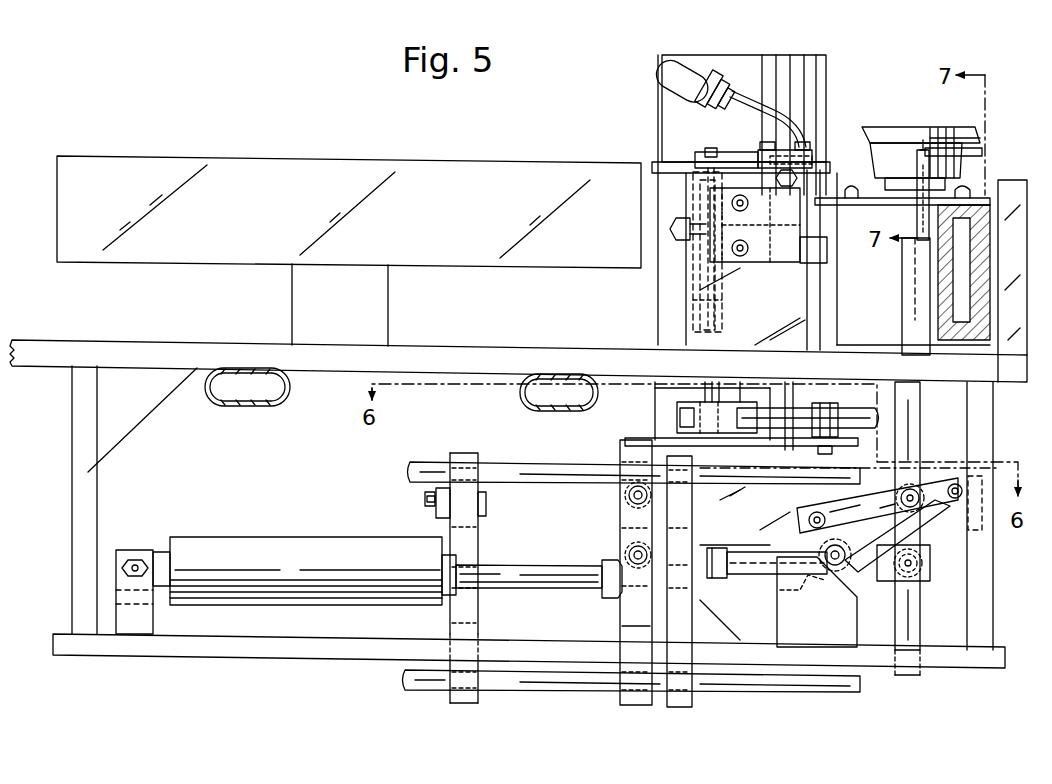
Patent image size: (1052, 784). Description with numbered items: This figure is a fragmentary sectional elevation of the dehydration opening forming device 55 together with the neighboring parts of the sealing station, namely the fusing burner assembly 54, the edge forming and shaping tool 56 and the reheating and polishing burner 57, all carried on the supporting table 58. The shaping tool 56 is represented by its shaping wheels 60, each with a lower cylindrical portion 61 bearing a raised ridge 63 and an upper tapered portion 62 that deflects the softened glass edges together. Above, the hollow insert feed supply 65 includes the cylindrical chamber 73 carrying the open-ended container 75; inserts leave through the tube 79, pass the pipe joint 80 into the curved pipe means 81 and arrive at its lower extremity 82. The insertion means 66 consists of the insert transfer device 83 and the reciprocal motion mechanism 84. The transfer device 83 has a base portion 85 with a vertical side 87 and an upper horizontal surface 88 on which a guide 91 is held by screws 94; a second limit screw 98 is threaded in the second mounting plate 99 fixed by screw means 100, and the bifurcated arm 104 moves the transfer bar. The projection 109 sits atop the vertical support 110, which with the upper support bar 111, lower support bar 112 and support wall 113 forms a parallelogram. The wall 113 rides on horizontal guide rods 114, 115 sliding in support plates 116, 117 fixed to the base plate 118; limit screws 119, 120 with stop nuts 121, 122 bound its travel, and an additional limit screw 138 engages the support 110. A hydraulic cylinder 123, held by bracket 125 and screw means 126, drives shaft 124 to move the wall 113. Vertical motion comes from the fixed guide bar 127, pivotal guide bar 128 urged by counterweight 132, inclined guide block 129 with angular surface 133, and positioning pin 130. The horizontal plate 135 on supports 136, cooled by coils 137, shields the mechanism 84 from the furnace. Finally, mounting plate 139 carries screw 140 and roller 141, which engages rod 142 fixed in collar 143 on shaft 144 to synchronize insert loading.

The fusing burner assembly 54 is at (190, 156).
The dehydration opening forming device 55 is at (638, 95).
The edge forming and shaping tool 56 is at (860, 118).
The reheating and polishing burner 57 is at (1017, 370).
The supporting table 58 is at (70, 406).
The shaping wheels 60 is at (950, 126).
The lower cylindrical portion 61 is at (975, 160).
The tapered portion 62 is at (978, 136).
The raised ridge 63 is at (982, 152).
The hollow insert feed supply 65 is at (798, 54).
The insertion means 66 is at (665, 152).
The hollow cylindrical metal chamber 73 is at (818, 210).
The cylindrical open-ended container 75 is at (826, 62).
The tube 79 is at (683, 76).
The pipe joint 80 is at (708, 74).
The curved pipe means 81 is at (752, 102).
The lower extremity of the pipe 82 is at (800, 138).
The insert transfer device 83 is at (672, 202).
The reciprocal motion mechanism 84 is at (965, 455).
The base portion 85 is at (690, 290).
The vertical side 87 is at (790, 314).
The upper horizontal surface 88 is at (694, 162).
The guide 91 is at (812, 160).
The screws 94 is at (805, 146).
The second limit screw 98 is at (787, 187).
The second mounting plate 99 is at (782, 248).
The screw means 100 is at (742, 212).
The bifurcated arm 104 is at (740, 160).
The projection 109 is at (922, 142).
The vertical support 110 is at (912, 268).
The upper support bar 111 is at (962, 518).
The lower support bar 112 is at (930, 576).
The support wall 113 is at (632, 612).
The horizontal guide rod 114 is at (442, 468).
The horizontal guide rod 115 is at (430, 688).
The support plate 116 is at (458, 610).
The support plate 117 is at (690, 700).
The base plate 118 is at (197, 652).
The limit screw 119 is at (420, 494).
The limit screw 120 is at (713, 560).
The stop nut 121 is at (446, 510).
The stop nut 122 is at (730, 578).
The hydraulic cylinder 123 is at (246, 556).
The shaft 124 is at (526, 572).
The bracket 125 is at (152, 620).
The screw means 126 is at (135, 557).
The fixed guide bar 127 is at (938, 480).
The pivotal guide bar 128 is at (908, 533).
The inclined guide block 129 is at (744, 580).
The positioning pin 130 is at (816, 590).
The counterweight 132 is at (745, 548).
The angular surface 133 is at (802, 585).
The horizontal plate 135 is at (192, 342).
The supports 136 is at (92, 468).
The coils 137 is at (250, 407).
The limit screw 138 is at (674, 229).
The mounting plate 139 is at (632, 440).
The screw 140 is at (826, 394).
The roller 141 is at (760, 400).
The horizontal rod 142 is at (858, 410).
The collar 143 is at (680, 420).
The shaft 144 is at (690, 306).